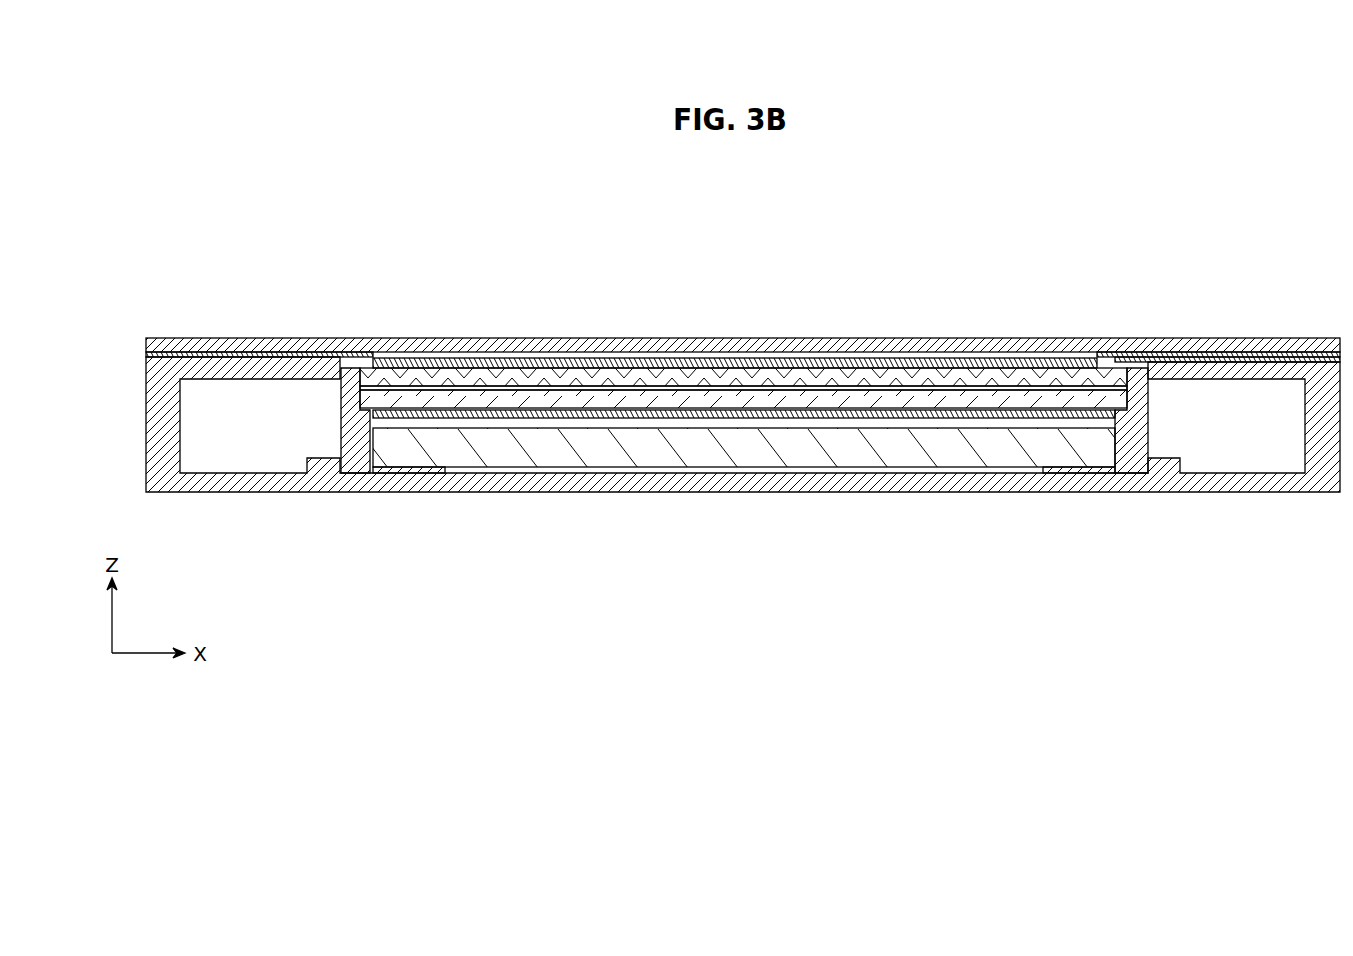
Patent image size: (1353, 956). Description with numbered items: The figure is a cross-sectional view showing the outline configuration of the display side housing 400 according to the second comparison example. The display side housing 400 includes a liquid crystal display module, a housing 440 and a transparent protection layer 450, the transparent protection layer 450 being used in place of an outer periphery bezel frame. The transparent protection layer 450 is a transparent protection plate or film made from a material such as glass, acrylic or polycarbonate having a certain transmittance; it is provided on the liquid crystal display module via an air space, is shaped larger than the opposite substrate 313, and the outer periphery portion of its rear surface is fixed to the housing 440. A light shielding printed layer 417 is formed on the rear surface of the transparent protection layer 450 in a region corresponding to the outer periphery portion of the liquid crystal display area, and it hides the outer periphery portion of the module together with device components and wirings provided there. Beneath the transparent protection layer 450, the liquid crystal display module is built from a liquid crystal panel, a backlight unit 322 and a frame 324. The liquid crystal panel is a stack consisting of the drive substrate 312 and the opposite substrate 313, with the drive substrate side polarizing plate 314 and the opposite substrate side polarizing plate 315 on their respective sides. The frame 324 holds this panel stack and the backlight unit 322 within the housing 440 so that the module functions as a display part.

The display side housing 400 is at (712, 181).
The housing 440 is at (1250, 493).
The transparent protection layer 450 is at (763, 338).
The light shielding printed layer 417 is at (263, 355).
The frame 324 is at (358, 472).
The opposite substrate side polarizing plate 315 is at (840, 360).
The opposite substrate 313 is at (920, 374).
The drive substrate 312 is at (1007, 398).
The drive substrate side polarizing plate 314 is at (1016, 418).
The backlight unit 322 is at (905, 445).